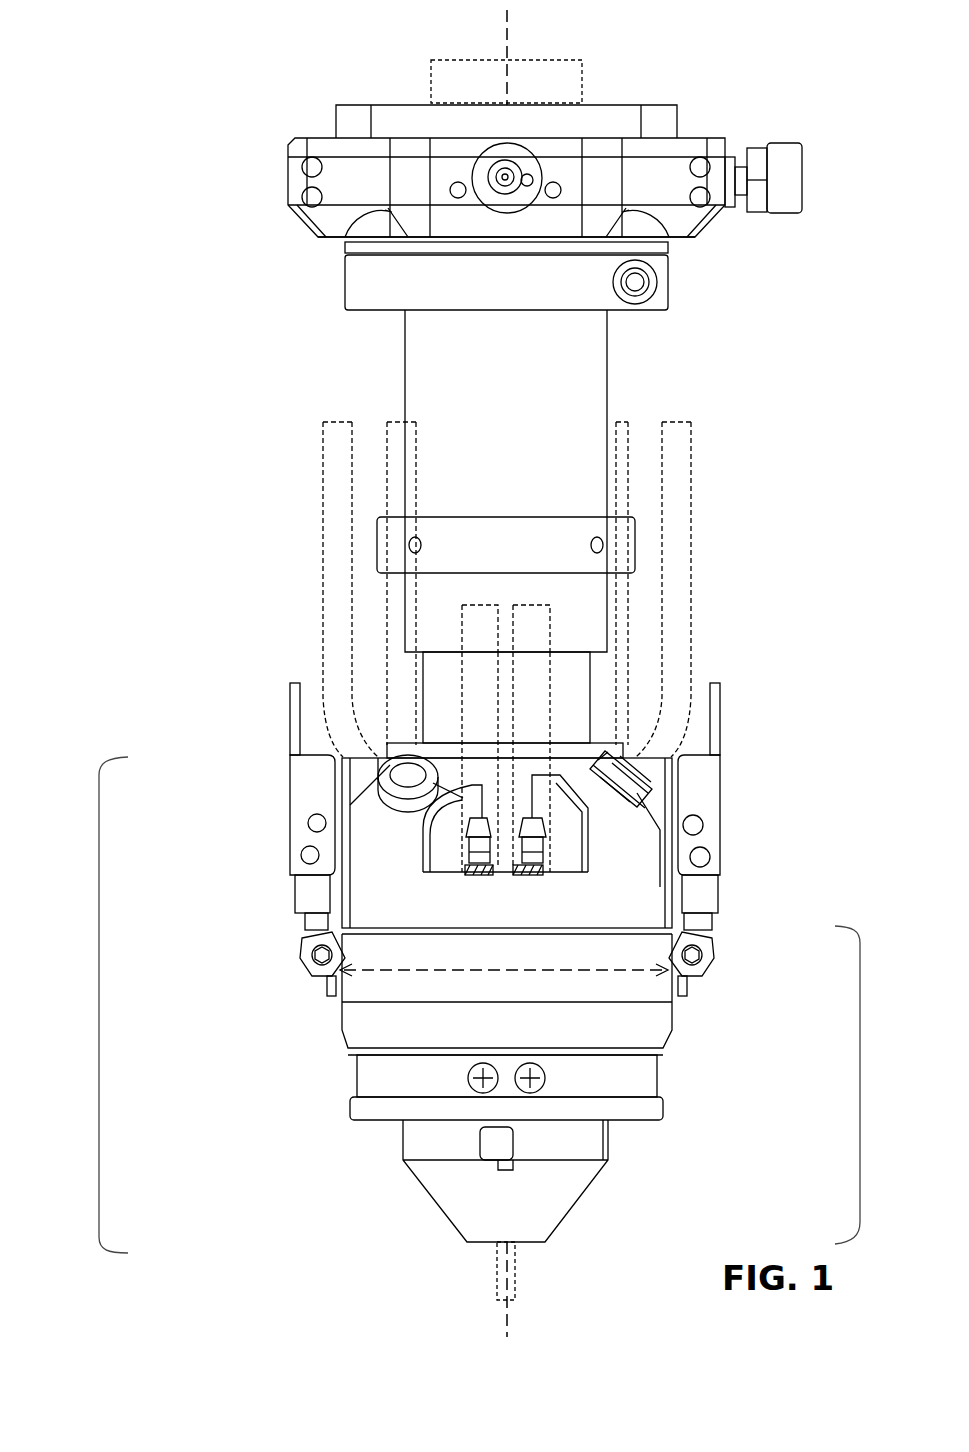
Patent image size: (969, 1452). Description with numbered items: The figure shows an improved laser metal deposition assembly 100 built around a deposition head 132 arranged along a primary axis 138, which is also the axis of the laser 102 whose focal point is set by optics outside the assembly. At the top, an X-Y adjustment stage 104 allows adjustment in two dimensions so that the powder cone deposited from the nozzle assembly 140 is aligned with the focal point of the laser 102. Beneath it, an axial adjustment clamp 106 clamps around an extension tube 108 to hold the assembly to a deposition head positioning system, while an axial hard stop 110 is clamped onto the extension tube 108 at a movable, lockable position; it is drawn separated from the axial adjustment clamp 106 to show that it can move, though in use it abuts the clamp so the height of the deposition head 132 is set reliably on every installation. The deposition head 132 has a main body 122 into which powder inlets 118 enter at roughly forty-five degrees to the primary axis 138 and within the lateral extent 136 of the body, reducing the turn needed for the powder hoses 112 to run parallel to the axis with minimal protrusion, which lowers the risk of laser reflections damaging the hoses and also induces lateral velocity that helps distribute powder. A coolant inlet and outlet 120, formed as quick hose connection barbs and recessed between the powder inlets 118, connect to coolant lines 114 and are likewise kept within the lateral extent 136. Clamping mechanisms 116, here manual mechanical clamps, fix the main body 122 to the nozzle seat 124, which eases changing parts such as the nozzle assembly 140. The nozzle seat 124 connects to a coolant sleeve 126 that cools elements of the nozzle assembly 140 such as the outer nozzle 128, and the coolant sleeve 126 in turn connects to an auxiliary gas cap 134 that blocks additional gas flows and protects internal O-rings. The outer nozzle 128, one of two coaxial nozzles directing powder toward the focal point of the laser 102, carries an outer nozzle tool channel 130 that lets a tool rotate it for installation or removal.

The laser metal deposition assembly 100 is at (360, 66).
The laser 102 is at (565, 72).
The X-Y adjustment stage 104 is at (296, 172).
The axial adjustment clamp 106 is at (350, 280).
The extension tube 108 is at (603, 370).
The axial hard stop 110 is at (622, 532).
The powder hoses 112 is at (397, 430).
The coolant lines 114 is at (475, 623).
The clamping mechanisms 116 is at (305, 785).
The powder inlets 118 is at (403, 802).
The coolant inlet and outlet 120 is at (473, 838).
The main body 122 is at (645, 893).
The nozzle seat 124 is at (368, 1018).
The coolant sleeve 126 is at (368, 1072).
The outer nozzle 128 is at (565, 1180).
The outer nozzle tool channel 130 is at (493, 1145).
The deposition head 132 is at (99, 1005).
The auxiliary gas cap 134 is at (655, 1108).
The lateral extent 136 is at (638, 972).
The primary axis 138 is at (505, 48).
The nozzle assembly 140 is at (862, 1087).